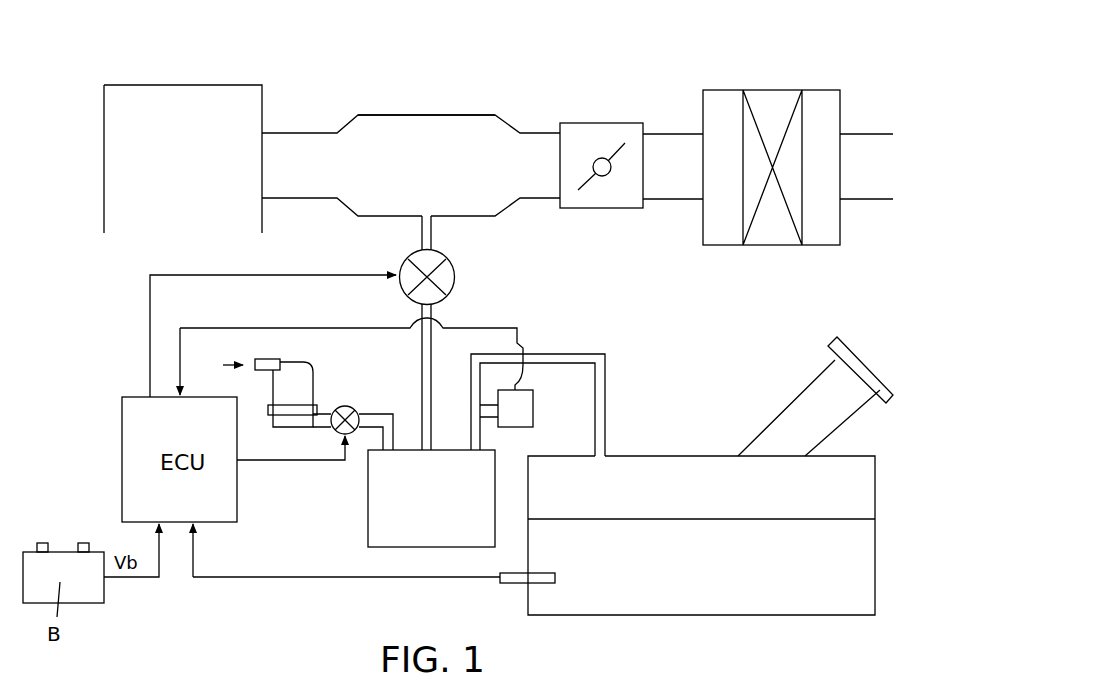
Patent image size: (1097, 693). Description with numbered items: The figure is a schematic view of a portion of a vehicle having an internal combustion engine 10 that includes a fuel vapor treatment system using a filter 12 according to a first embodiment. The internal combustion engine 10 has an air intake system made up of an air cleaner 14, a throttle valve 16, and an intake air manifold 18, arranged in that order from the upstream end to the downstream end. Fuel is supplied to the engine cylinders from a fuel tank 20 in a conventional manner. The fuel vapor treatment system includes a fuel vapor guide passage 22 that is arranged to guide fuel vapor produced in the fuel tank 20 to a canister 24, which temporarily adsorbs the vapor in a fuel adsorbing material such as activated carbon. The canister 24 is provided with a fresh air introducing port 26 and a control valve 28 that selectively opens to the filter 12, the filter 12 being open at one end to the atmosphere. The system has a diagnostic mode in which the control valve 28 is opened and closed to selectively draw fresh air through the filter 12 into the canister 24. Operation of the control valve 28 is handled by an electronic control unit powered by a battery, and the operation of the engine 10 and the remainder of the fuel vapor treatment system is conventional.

The internal combustion engine 10 is at (668, 52).
The filter 12 is at (300, 387).
The air cleaner 14 is at (775, 90).
The throttle valve 16 is at (592, 123).
The intake air manifold 18 is at (402, 113).
The fuel tank 20 is at (660, 490).
The fuel vapor guide passage 22 is at (563, 357).
The canister 24 is at (398, 508).
The fresh air introducing port 26 is at (373, 413).
The control valve 28 is at (335, 433).